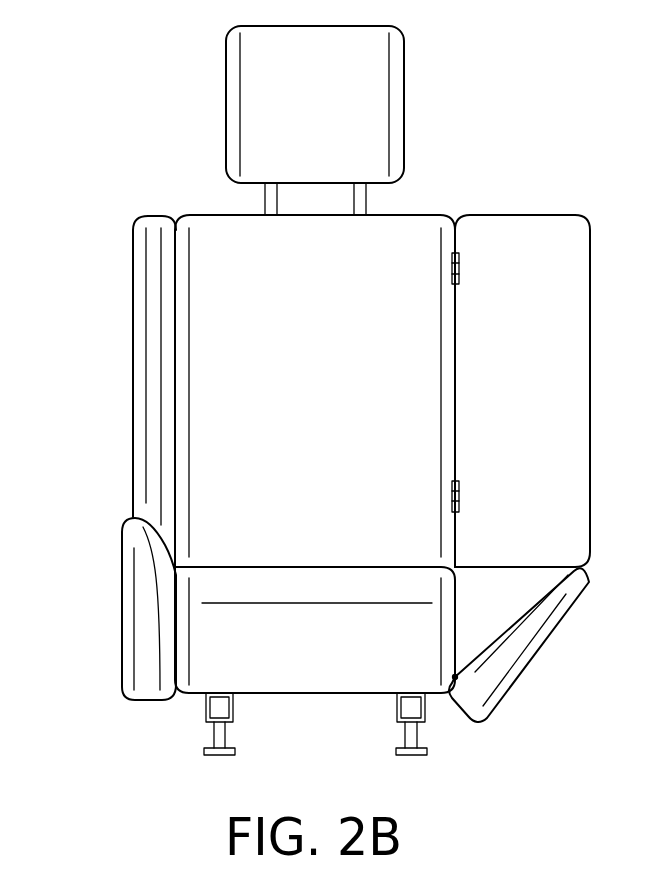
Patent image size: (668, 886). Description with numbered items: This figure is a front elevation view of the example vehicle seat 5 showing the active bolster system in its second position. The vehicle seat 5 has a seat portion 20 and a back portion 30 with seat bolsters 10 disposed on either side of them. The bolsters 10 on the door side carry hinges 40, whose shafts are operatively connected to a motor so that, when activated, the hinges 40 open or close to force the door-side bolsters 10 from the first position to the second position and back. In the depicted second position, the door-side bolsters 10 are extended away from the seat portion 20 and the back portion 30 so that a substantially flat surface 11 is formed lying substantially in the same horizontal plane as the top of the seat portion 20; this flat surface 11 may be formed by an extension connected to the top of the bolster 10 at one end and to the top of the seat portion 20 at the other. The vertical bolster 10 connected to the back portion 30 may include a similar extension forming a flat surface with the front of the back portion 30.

The vehicle seat 5 is at (116, 107).
The seat bolster 10 is at (133, 329).
The substantially flat surface 11 is at (516, 567).
The seat portion 20 is at (333, 667).
The back portion 30 is at (333, 368).
The hinge 40 is at (455, 228).